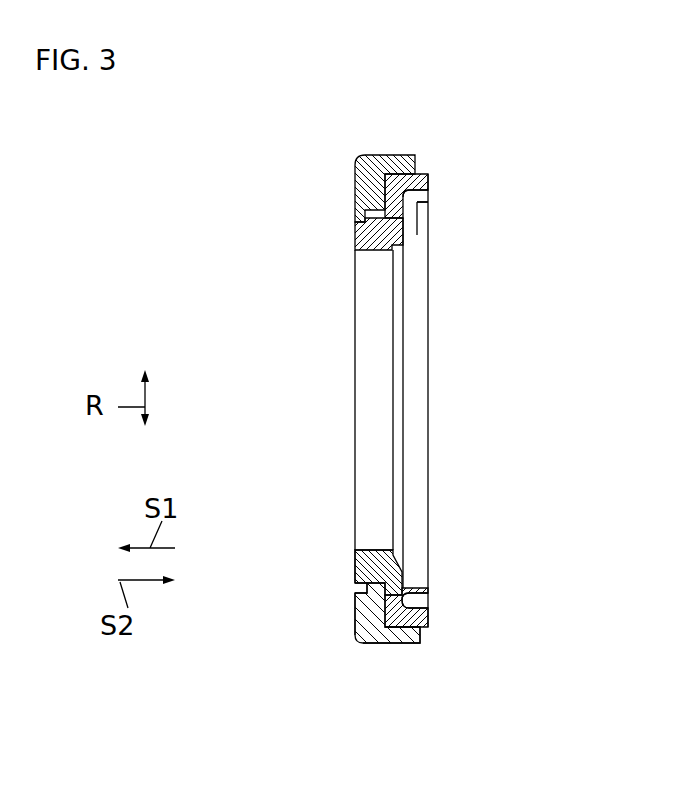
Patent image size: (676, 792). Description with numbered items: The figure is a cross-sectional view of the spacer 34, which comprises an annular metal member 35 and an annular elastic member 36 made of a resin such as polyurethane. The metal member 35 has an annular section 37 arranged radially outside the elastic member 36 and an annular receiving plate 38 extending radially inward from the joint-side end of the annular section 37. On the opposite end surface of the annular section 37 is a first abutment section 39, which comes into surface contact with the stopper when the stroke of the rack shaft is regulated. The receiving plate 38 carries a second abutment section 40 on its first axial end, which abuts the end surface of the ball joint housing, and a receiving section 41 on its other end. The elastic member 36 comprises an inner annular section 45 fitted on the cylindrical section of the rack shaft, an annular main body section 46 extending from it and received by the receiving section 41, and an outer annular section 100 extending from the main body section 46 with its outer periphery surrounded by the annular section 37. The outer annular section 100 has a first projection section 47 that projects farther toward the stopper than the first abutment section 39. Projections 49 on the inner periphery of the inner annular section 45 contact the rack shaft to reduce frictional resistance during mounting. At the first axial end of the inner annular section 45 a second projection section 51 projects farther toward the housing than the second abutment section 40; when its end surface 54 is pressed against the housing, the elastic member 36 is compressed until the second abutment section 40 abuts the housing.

The spacer 34 is at (414, 142).
The annular metal member 35 is at (418, 659).
The annular elastic member 36 is at (474, 221).
The annular section 37 is at (413, 627).
The annular receiving plate 38 is at (356, 633).
The first abutment section 39 is at (419, 632).
The second abutment section 40 is at (355, 618).
The receiving section 41 is at (424, 599).
The inner annular section 45 is at (373, 250).
The annular main body section 46 is at (430, 210).
The first projection section 47 is at (423, 172).
The projections 49 is at (370, 550).
The second projection section 51 is at (355, 587).
The end surface 54 is at (355, 562).
The outer annular section 100 is at (406, 192).